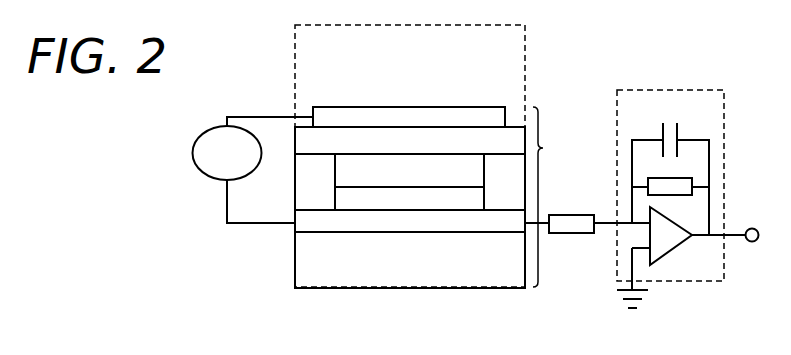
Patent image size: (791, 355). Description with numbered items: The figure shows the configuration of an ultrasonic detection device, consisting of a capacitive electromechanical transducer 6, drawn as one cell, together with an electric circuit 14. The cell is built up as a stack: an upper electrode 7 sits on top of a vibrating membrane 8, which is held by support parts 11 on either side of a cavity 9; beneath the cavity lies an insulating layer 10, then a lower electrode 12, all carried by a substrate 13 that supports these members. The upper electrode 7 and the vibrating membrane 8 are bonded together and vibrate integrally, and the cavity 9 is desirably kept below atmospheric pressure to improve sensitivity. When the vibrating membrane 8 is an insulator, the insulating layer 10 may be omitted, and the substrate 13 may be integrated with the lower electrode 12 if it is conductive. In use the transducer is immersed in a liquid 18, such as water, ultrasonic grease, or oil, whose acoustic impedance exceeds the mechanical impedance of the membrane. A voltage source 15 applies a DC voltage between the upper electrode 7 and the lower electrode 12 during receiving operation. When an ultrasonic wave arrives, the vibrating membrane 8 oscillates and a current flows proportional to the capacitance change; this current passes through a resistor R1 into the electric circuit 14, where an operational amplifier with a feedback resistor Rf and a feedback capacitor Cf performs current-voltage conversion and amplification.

The capacitive electromechanical transducer 6 is at (548, 197).
The upper electrode 7 is at (377, 115).
The vibrating membrane 8 is at (470, 140).
The cavity 9 is at (377, 182).
The insulating layer 10 is at (450, 200).
The support parts 11 is at (306, 197).
The lower electrode 12 is at (322, 224).
The substrate 13 is at (302, 268).
The electric circuit 14 is at (688, 213).
The voltage source 15 is at (203, 150).
The liquid 18 is at (525, 47).
The resistor R1 is at (575, 215).
The feedback resistor Rf is at (675, 178).
The feedback capacitor Cf is at (678, 132).